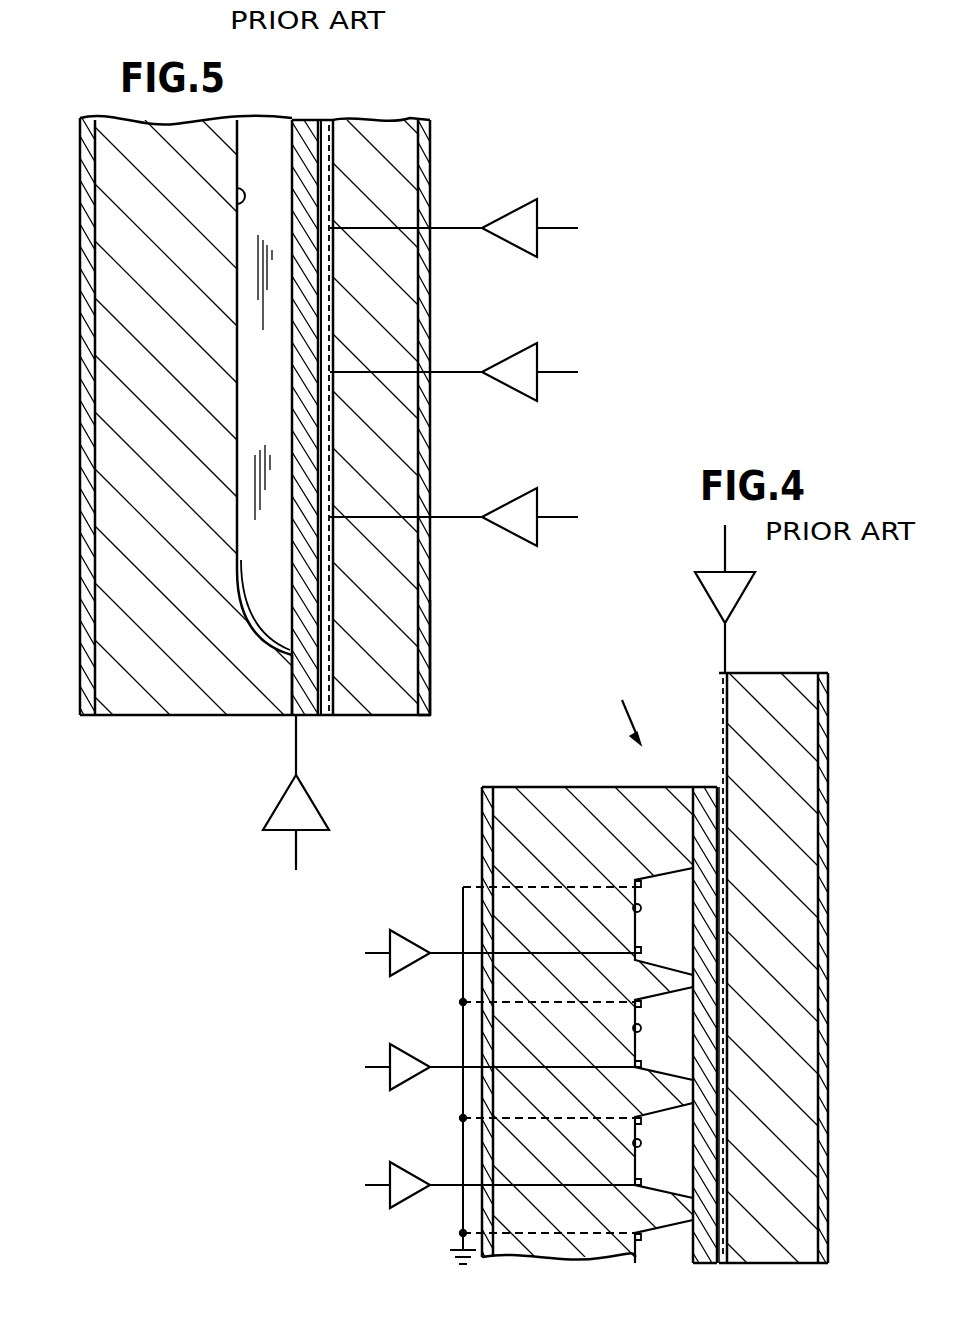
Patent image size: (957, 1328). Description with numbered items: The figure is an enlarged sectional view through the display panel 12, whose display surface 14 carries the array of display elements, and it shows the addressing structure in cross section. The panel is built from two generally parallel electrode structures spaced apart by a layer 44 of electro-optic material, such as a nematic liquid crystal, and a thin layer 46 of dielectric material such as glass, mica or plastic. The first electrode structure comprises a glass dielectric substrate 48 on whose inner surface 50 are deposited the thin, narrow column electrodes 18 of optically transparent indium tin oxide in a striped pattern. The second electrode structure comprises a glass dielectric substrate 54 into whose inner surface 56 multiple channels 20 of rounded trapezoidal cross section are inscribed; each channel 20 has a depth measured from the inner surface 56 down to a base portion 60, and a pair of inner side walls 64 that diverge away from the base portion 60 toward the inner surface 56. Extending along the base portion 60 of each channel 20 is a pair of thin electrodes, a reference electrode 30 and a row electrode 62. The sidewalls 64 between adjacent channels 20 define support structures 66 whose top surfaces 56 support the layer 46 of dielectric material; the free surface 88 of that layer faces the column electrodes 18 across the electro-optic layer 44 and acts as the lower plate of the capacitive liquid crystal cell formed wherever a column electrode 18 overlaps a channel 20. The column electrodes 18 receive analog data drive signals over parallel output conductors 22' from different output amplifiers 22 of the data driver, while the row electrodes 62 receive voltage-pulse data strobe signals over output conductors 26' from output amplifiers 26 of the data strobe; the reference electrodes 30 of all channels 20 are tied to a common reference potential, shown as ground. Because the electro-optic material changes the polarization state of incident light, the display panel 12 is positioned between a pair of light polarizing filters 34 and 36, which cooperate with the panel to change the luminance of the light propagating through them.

In FIG. 4, the display panel 12 is at (623, 710).
In FIG. 5, the display surface 14 is at (432, 633).
In FIG. 4, the display surface 14 is at (828, 712).
In FIG. 5, the column electrodes 18 is at (329, 160).
In FIG. 4, the column electrodes 18 is at (722, 693).
In FIG. 5, the channels 20 is at (284, 390).
In FIG. 4, the channels 20 is at (681, 931).
In FIG. 5, the output amplifiers 22 is at (530, 348).
In FIG. 4, the output amplifiers 22 is at (706, 574).
In FIG. 5, the output conductors 22' is at (415, 372).
In FIG. 4, the output conductors 22' is at (704, 648).
In FIG. 5, the output amplifiers 26 is at (271, 822).
In FIG. 4, the output amplifiers 26 is at (397, 1050).
In FIG. 5, the output conductors 26' is at (271, 745).
In FIG. 4, the output conductors 26' is at (531, 1047).
In FIG. 5, the reference electrode 30 is at (252, 608).
In FIG. 4, the reference electrode 30 is at (642, 884).
In FIG. 5, the light polarizing filter 34 is at (92, 498).
In FIG. 4, the light polarizing filter 34 is at (484, 820).
In FIG. 5, the light polarizing filter 36 is at (432, 136).
In FIG. 4, the light polarizing filter 36 is at (822, 673).
In FIG. 5, the layer of electro-optic material 44 is at (322, 718).
In FIG. 4, the layer of electro-optic material 44 is at (712, 786).
In FIG. 5, the layer of dielectric material 46 is at (298, 718).
In FIG. 4, the layer of dielectric material 46 is at (700, 787).
In FIG. 5, the glass dielectric substrate 48 is at (386, 130).
In FIG. 4, the glass dielectric substrate 48 is at (775, 680).
In FIG. 5, the inner surface 50 is at (333, 165).
In FIG. 5, the glass dielectric substrate 54 is at (156, 714).
In FIG. 4, the glass dielectric substrate 54 is at (500, 846).
In FIG. 5, the inner surface 56 is at (292, 674).
In FIG. 5, the base portion 60 is at (237, 208).
In FIG. 4, the base portion 60 is at (633, 908).
In FIG. 4, the row electrodes 62 is at (641, 957).
In FIG. 4, the inner side walls 64 is at (692, 868).
In FIG. 4, the support structures 66 is at (692, 985).
In FIG. 5, the free surface 88 is at (290, 628).